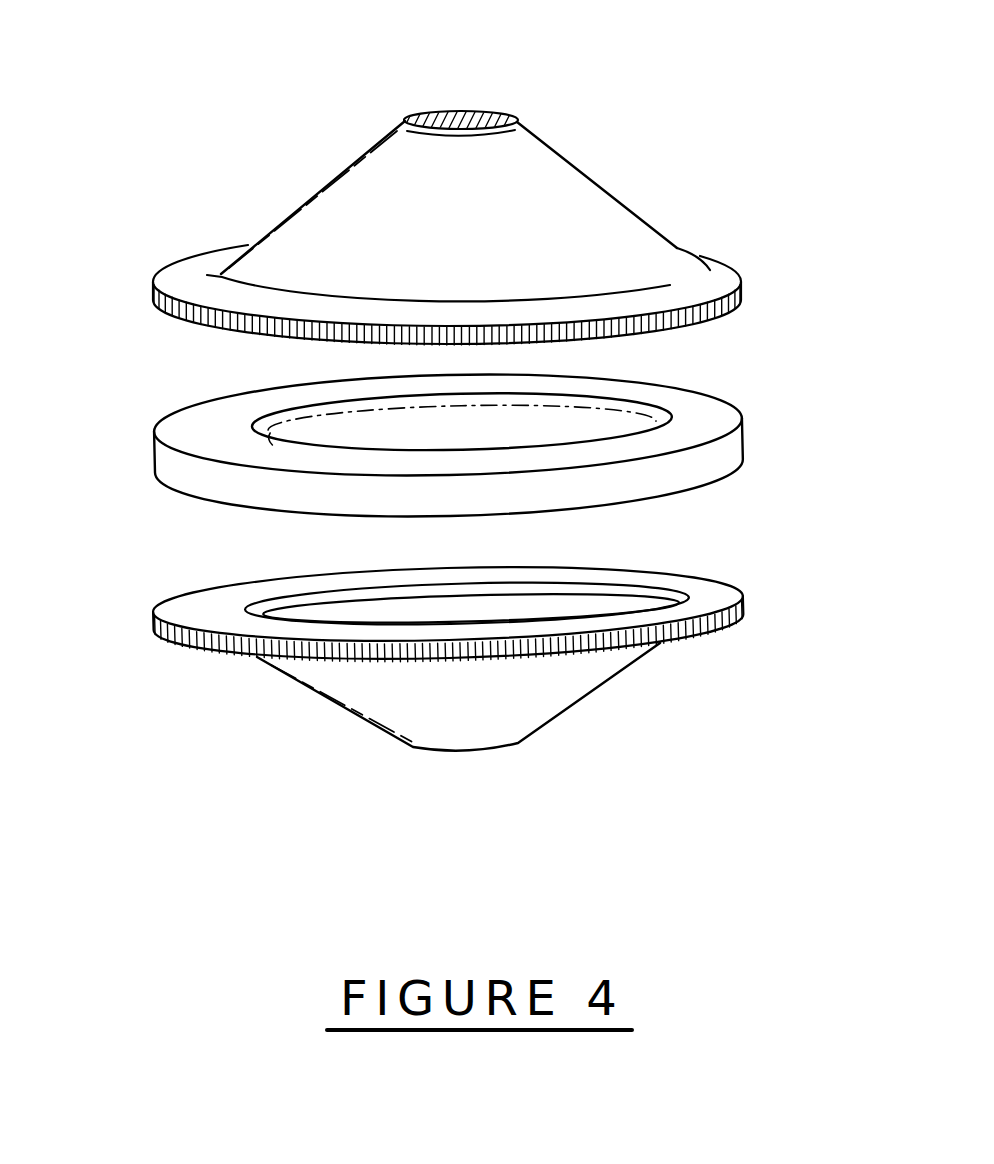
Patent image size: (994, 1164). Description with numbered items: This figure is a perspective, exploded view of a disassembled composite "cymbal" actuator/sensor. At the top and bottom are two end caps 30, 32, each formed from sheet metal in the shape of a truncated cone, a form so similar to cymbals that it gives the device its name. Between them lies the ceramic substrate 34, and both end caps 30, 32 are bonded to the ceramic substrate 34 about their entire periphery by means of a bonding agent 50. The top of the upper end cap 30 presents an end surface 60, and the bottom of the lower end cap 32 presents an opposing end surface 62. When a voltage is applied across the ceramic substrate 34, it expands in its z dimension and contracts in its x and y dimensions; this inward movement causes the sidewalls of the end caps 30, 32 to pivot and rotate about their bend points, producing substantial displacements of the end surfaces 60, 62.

The end cap 30 is at (537, 187).
The end surface 60 is at (455, 108).
The bonding agent 50 is at (451, 435).
The ceramic substrate 34 is at (180, 463).
The end cap 32 is at (557, 682).
The end surface 62 is at (481, 750).